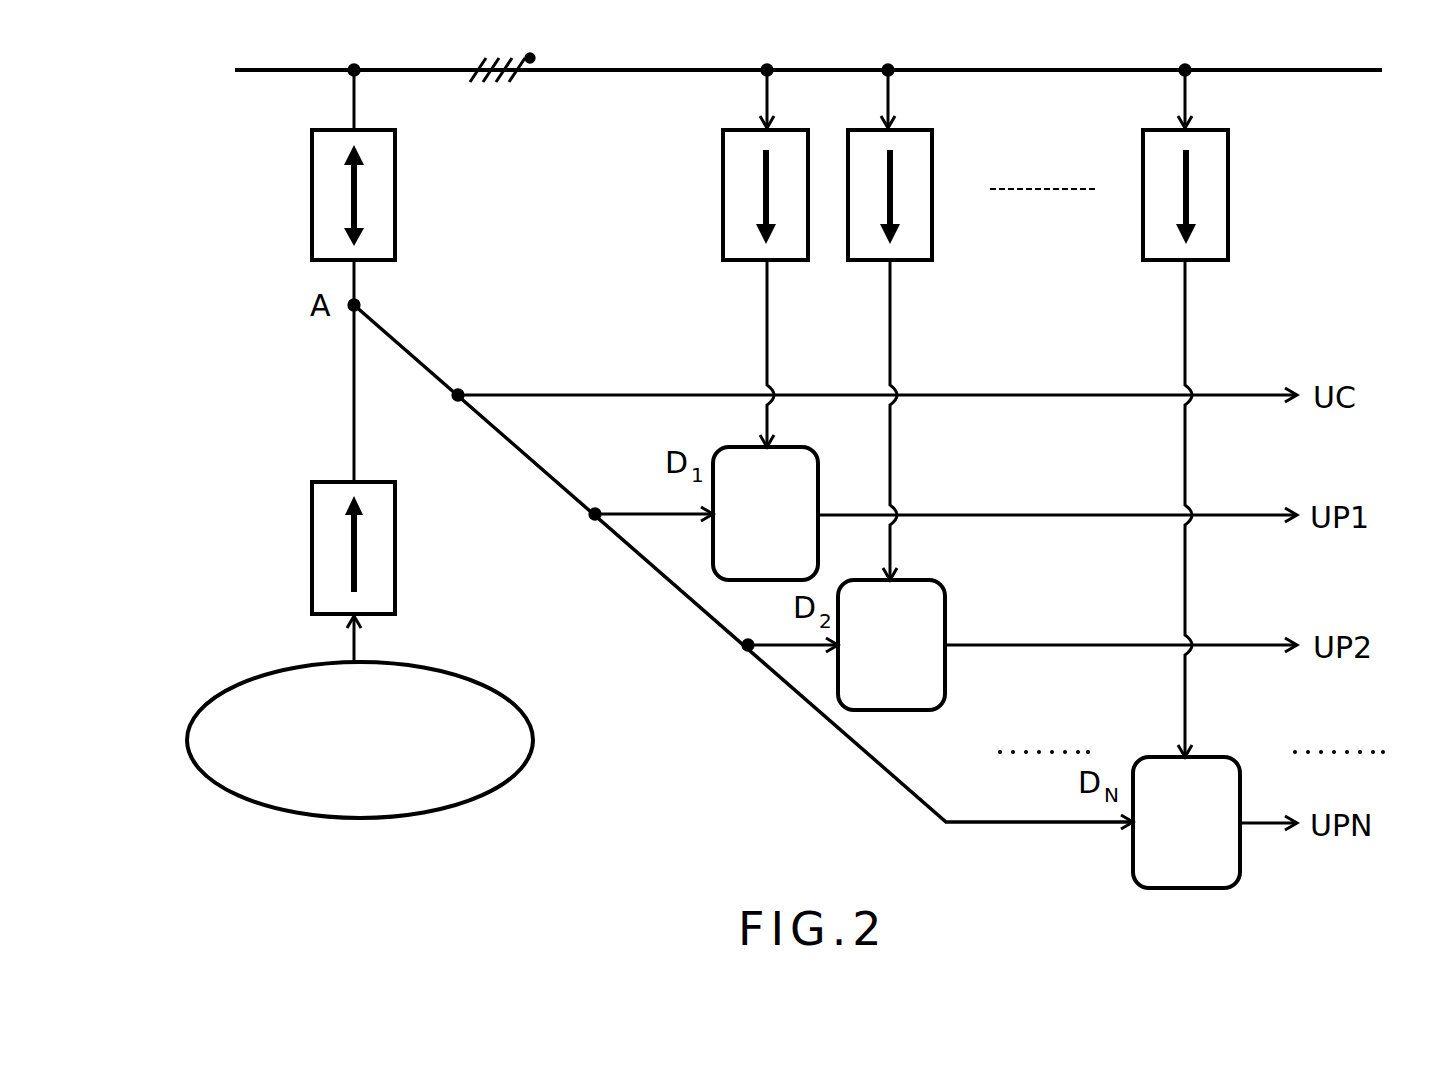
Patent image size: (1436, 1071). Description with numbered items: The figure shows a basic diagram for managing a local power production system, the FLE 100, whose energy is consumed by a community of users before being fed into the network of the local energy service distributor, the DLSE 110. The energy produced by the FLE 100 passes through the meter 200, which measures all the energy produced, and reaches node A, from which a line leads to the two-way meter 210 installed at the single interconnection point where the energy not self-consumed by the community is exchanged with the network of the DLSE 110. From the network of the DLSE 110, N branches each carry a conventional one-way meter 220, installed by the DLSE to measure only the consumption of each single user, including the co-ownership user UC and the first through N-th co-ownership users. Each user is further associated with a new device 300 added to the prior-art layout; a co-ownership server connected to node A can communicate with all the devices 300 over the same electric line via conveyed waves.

The network of the DLSE 110 is at (808, 54).
The meter 210 is at (311, 187).
The meter 200 is at (311, 572).
The FLE 100 is at (360, 740).
The meters 220 is at (715, 210).
The new devices 300 is at (976, 667).